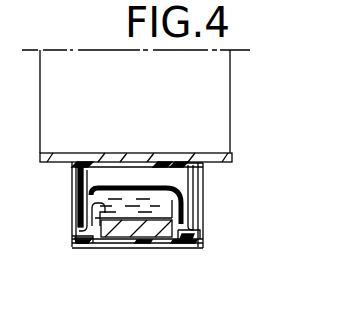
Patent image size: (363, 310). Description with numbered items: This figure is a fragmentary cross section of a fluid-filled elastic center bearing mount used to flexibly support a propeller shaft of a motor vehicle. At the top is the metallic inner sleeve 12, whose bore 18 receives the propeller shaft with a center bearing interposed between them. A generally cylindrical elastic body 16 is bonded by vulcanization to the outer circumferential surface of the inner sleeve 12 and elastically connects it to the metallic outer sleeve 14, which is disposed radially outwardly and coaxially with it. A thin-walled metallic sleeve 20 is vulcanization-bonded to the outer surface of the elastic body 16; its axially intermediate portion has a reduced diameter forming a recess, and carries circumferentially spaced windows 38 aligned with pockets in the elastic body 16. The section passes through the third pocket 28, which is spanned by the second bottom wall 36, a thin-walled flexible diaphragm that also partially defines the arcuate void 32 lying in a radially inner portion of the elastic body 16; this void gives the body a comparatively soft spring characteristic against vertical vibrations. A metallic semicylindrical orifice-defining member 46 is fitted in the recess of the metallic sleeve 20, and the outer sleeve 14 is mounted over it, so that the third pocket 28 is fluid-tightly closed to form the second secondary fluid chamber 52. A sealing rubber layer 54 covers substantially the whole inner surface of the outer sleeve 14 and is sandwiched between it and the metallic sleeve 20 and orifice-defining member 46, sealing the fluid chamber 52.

The inner sleeve 12 is at (229, 157).
The outer sleeve 14 is at (98, 248).
The elastic body 16 is at (199, 215).
The bore 18 is at (103, 153).
The metallic sleeve 20 is at (200, 248).
The third pocket 28 is at (97, 208).
The arcuate void 32 is at (130, 178).
The second bottom wall 36 is at (142, 186).
The windows 38 is at (168, 248).
The orifice-defining member 46 is at (127, 232).
The second secondary fluid chamber 52 is at (163, 202).
The sealing rubber layer 54 is at (73, 248).